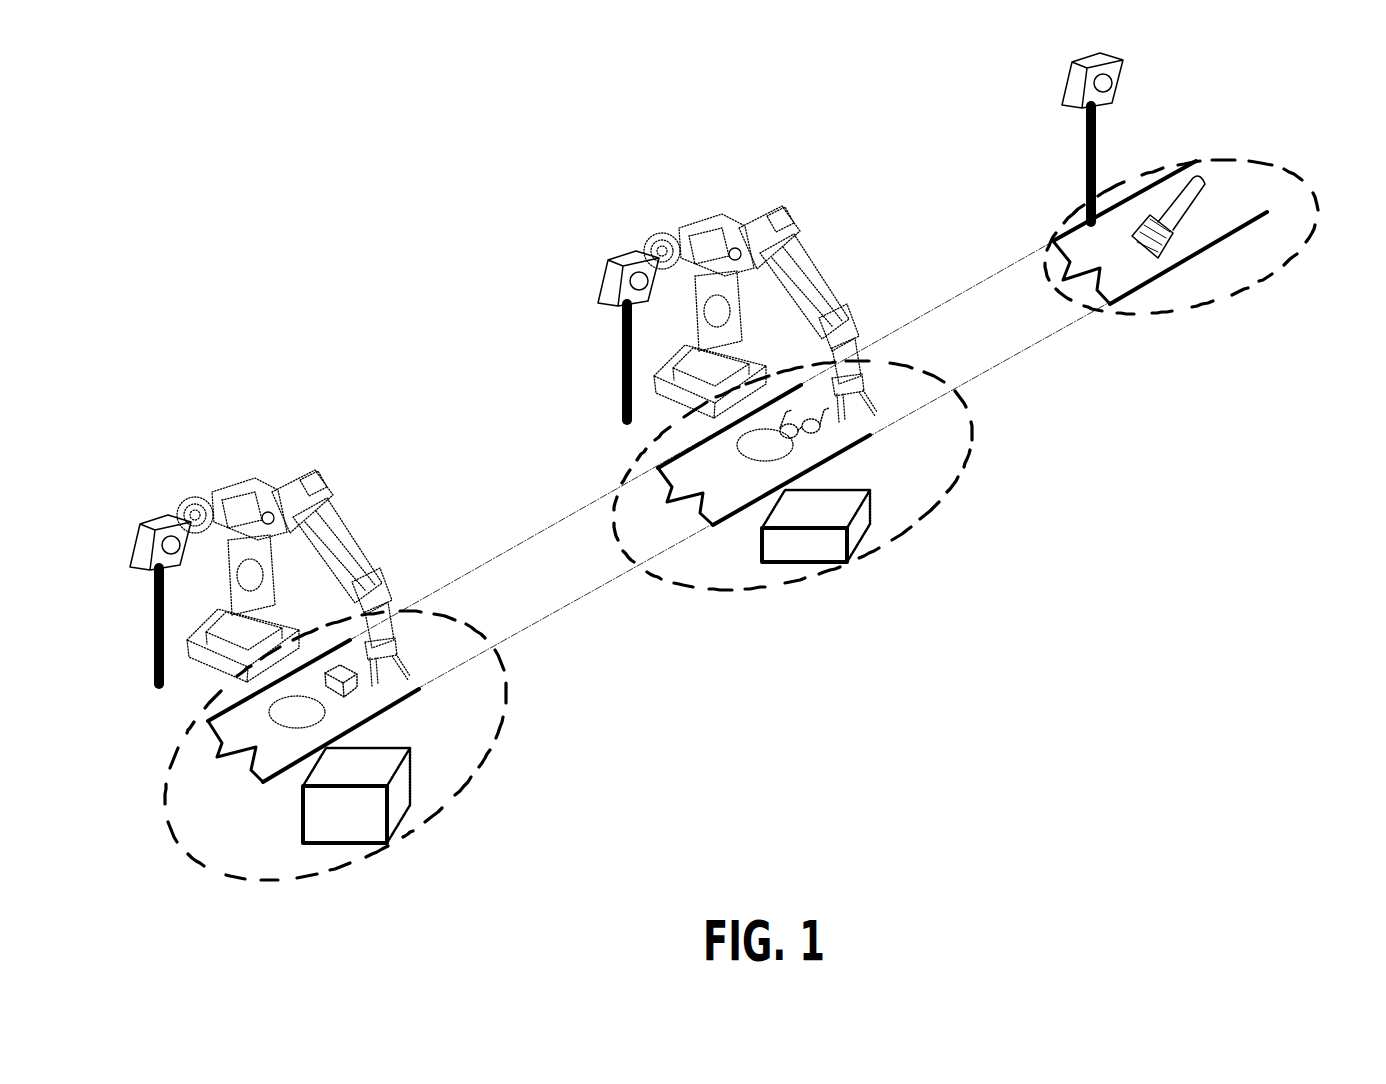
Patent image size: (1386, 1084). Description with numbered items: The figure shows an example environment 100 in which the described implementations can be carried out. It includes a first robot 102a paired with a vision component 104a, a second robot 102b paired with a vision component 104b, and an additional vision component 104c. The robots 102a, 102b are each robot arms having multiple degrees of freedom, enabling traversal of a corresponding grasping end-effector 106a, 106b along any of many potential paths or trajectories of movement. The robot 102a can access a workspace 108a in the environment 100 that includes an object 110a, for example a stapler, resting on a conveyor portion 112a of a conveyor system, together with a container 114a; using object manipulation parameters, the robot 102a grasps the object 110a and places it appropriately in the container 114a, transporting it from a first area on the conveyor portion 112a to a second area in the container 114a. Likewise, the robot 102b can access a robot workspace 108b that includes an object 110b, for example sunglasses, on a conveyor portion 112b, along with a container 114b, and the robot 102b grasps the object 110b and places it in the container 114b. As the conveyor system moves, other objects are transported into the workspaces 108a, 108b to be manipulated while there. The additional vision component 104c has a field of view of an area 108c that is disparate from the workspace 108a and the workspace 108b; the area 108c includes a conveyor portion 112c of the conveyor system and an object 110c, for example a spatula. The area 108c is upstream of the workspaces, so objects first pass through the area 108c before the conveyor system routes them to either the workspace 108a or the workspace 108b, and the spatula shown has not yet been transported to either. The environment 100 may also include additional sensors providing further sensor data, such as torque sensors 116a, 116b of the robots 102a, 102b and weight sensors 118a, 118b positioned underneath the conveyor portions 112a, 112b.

The environment 100 is at (305, 166).
The first robot 102a is at (186, 669).
The second robot 102b is at (652, 399).
The vision component 104a is at (160, 572).
The vision component 104b is at (628, 308).
The additional vision component 104c is at (1067, 84).
The grasping end-effector 106a is at (409, 661).
The grasping end-effector 106b is at (875, 392).
The workspace 108a is at (165, 795).
The robot workspace 108b is at (613, 518).
The area 108c is at (1290, 257).
The object 110a is at (361, 689).
The object 110b is at (822, 422).
The object 110c is at (1173, 222).
The conveyor portion 112a is at (196, 723).
The conveyor portion 112b is at (628, 452).
The conveyor portion 112c is at (1268, 212).
The container 114a is at (335, 823).
The container 114b is at (816, 538).
The torque sensor 116a is at (269, 512).
The torque sensor 116b is at (752, 289).
The weight sensor 118a is at (295, 730).
The weight sensor 118b is at (765, 462).